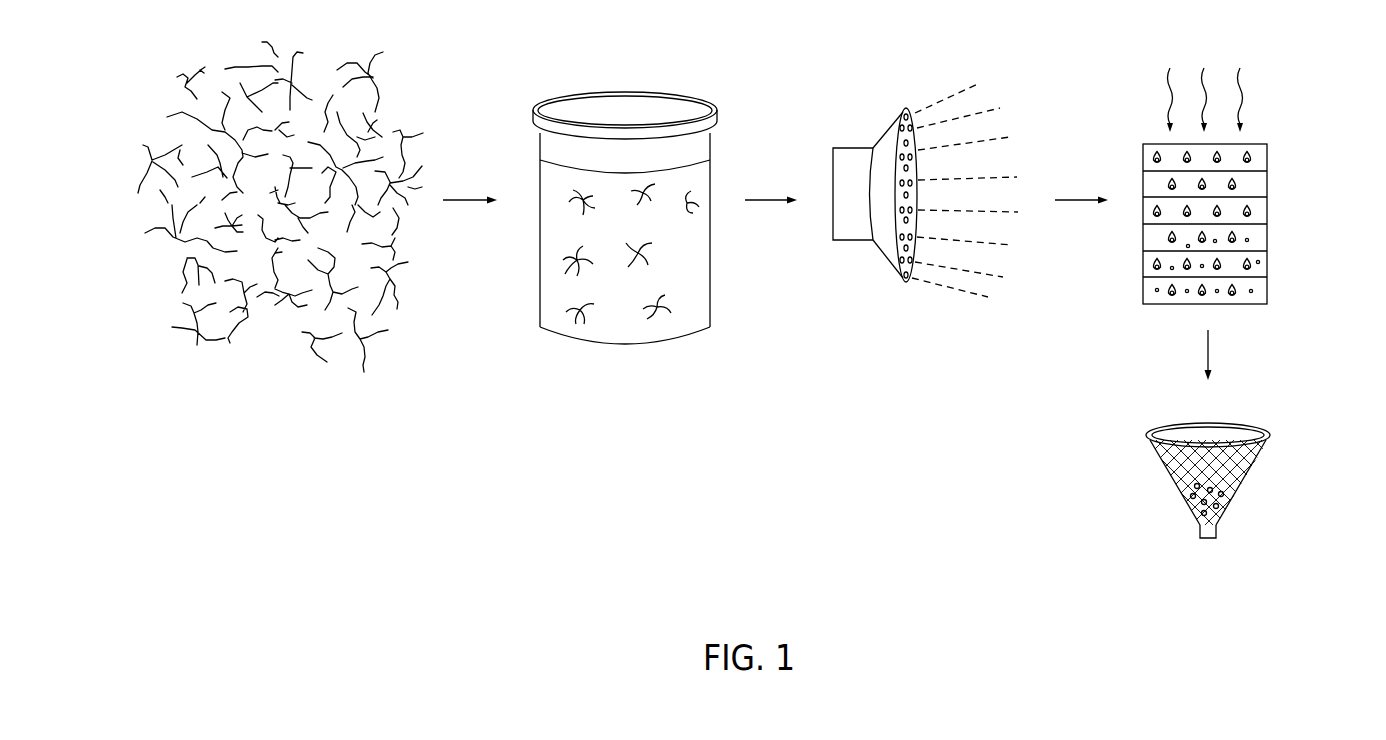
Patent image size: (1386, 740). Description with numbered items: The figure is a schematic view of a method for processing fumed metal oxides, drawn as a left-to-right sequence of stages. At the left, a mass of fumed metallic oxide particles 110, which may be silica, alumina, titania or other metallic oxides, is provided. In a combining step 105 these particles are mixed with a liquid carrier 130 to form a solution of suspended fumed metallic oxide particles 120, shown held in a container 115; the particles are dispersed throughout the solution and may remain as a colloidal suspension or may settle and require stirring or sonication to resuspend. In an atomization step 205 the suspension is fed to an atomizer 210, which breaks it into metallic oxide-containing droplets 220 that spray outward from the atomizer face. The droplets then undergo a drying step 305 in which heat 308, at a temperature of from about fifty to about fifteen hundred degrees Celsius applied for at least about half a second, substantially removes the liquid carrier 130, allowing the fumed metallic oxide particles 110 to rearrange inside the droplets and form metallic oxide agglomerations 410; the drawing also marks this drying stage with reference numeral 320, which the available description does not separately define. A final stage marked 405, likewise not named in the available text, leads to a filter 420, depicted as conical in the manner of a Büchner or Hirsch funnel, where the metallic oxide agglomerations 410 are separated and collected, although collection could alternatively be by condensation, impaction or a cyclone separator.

The combining step 105 is at (463, 200).
The fumed metallic oxide particles 110 is at (580, 324).
The container 115 is at (655, 341).
The solution of suspended fumed metallic oxide particles 120 is at (610, 280).
The liquid carrier 130 is at (697, 278).
The atomization step 205 is at (762, 200).
The atomizer 210 is at (873, 151).
The metallic oxide-containing droplets 220 is at (950, 285).
The drying step 305 is at (1077, 200).
The heat 308 is at (1243, 80).
The drying chamber 320 is at (1253, 260).
The collecting step 405 is at (1204, 348).
The metallic oxide agglomerations 410 is at (1155, 290).
The filter 420 is at (1217, 479).